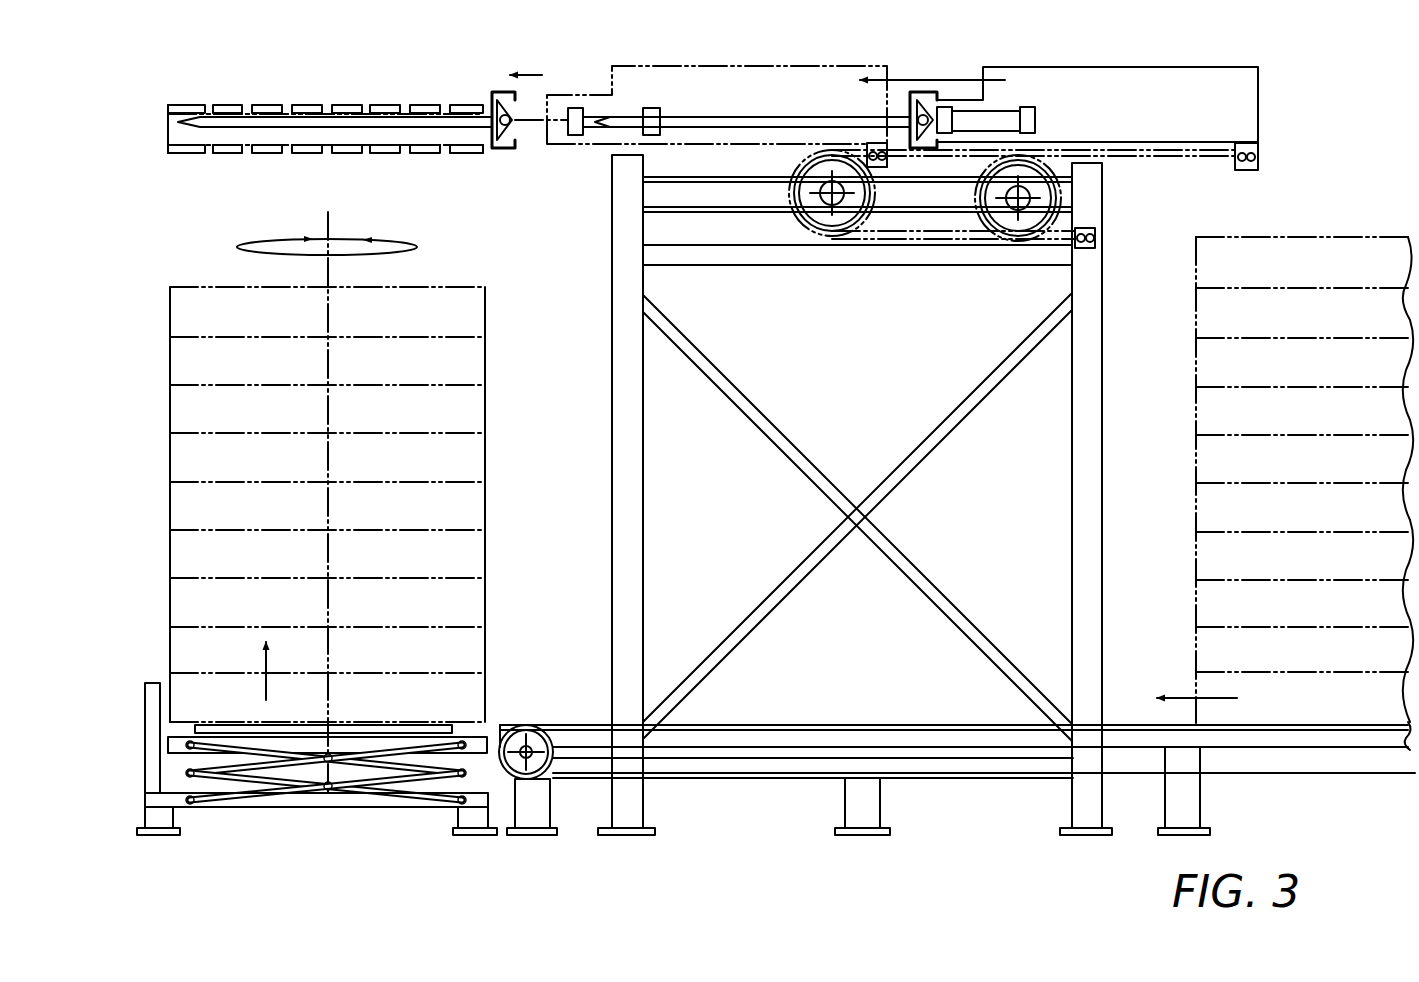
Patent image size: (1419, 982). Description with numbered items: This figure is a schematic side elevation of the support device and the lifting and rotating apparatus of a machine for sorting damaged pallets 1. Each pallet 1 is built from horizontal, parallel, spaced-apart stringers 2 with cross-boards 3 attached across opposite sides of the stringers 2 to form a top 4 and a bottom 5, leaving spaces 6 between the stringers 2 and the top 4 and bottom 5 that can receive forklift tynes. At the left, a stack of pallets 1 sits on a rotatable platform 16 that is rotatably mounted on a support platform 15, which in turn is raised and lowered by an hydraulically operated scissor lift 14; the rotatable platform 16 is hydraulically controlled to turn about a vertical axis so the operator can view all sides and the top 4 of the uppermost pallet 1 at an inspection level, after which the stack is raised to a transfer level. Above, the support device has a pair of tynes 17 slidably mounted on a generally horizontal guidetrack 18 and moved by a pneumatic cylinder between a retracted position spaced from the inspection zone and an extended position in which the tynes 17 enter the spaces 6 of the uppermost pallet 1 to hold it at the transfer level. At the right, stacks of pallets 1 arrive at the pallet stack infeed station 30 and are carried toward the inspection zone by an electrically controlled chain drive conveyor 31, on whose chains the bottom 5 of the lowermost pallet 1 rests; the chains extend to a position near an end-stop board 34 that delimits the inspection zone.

The pallet 1 is at (303, 99).
The stringer 2 is at (198, 133).
The cross-board 3 is at (345, 104).
The top 4 is at (185, 103).
The bottom 5 is at (228, 153).
The space 6 is at (365, 134).
The scissor lift 14 is at (395, 782).
The support platform 15 is at (380, 750).
The rotatable platform 16 is at (352, 728).
The tynes 17 is at (433, 120).
The guidetrack 18 is at (736, 212).
The pallet stack infeed station 30 is at (1323, 784).
The chain drive conveyor 31 is at (568, 721).
The end-stop board 34 is at (150, 705).